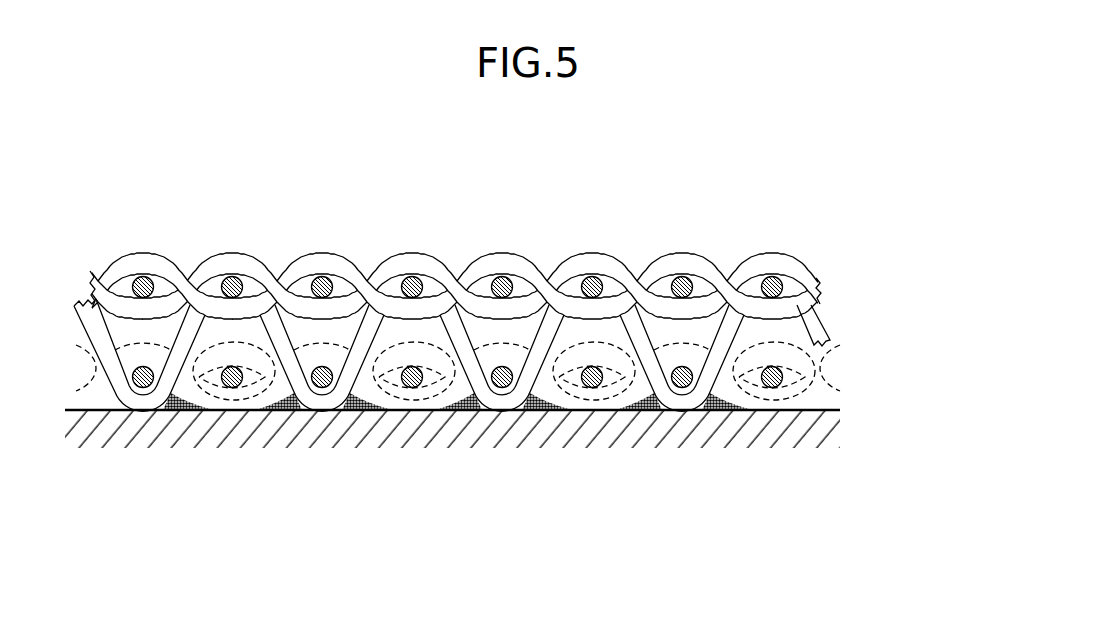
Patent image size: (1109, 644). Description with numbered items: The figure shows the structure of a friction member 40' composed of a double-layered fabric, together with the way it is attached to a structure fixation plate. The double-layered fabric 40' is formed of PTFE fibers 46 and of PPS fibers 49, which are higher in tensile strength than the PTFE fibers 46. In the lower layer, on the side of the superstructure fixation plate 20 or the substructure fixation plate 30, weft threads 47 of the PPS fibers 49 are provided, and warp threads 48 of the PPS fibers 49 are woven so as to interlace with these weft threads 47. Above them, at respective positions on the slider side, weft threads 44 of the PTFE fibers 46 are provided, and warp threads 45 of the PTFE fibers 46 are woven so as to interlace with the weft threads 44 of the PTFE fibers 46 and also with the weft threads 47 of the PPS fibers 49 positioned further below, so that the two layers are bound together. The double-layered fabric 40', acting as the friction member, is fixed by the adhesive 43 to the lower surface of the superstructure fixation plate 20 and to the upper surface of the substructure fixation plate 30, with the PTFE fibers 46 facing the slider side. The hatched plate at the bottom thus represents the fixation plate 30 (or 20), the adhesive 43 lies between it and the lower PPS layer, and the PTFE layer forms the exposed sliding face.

The friction member composed of a double-layered fabric 40' is at (520, 380).
The adhesive 43 is at (192, 410).
The weft threads of the PTFE fibers 44 is at (503, 278).
The warp threads of the PTFE fibers 45 is at (230, 256).
The PTFE fibers 46 is at (494, 277).
The weft threads of the PPS fibers 47 is at (502, 388).
The warp threads of the PPS fibers 48 is at (233, 396).
The PPS fibers 49 is at (505, 479).
The substructure fixation plate 30 is at (452, 456).
The superstructure fixation plate 20 is at (308, 502).